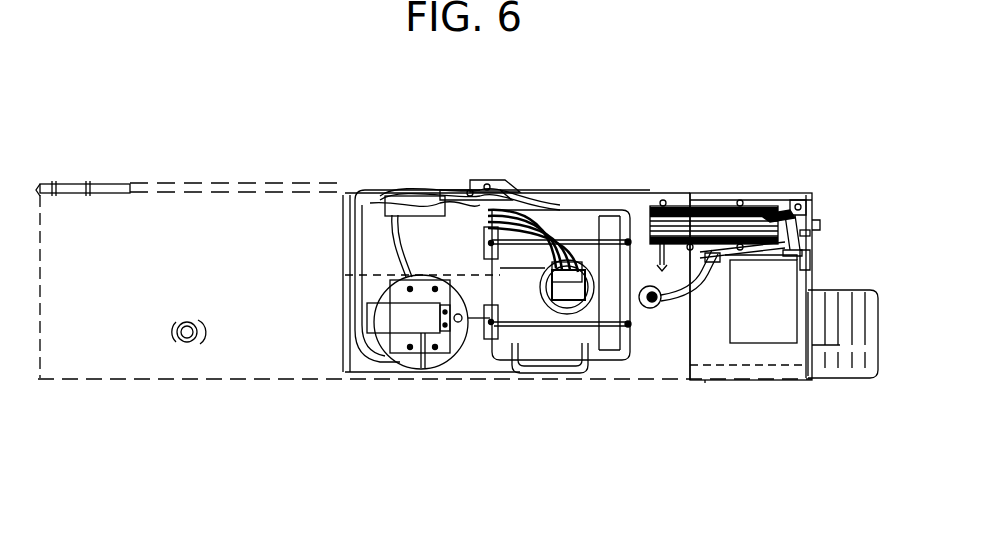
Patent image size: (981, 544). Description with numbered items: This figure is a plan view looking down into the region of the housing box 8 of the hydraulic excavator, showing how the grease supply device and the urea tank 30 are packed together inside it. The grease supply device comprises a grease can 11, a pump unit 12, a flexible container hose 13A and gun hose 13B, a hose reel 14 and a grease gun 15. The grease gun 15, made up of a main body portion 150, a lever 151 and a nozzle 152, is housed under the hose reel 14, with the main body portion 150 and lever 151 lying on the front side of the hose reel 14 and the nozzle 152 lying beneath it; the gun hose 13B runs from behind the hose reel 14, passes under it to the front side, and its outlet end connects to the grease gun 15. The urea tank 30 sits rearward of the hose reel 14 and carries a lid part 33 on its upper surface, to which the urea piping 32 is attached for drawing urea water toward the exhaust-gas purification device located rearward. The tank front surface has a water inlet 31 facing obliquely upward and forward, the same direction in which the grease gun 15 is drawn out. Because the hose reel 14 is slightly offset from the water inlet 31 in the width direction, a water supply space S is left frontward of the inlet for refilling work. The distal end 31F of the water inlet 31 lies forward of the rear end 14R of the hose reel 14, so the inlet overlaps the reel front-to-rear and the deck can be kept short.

The housing box 8 is at (562, 191).
The grease can 11 is at (455, 350).
The pump unit 12 is at (395, 320).
The container hose 13A is at (690, 305).
The gun hose 13B is at (760, 206).
The hose reel 14 is at (735, 197).
The rear end of the hose reel 14R is at (650, 207).
The grease gun 15 is at (818, 248).
The urea tank 30 is at (610, 215).
The water inlet 31 is at (622, 328).
The distal end of the water inlet 31F is at (648, 304).
The urea piping 32 is at (503, 215).
The lid part 33 is at (566, 302).
The main body portion 150 is at (806, 234).
The lever 151 is at (797, 196).
The nozzle 152 is at (772, 302).
The water supply space S is at (712, 315).